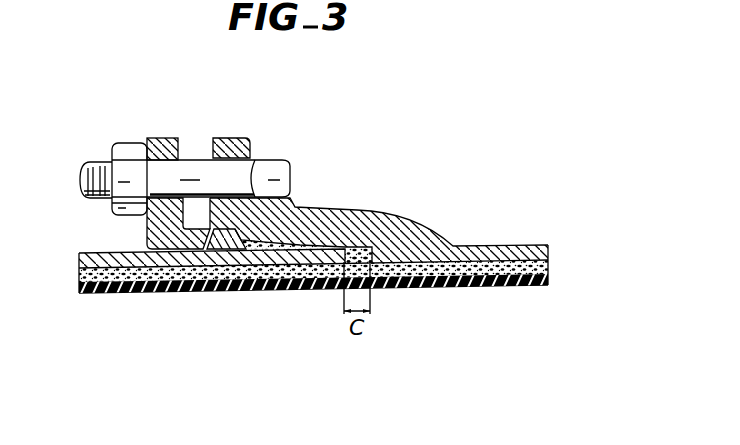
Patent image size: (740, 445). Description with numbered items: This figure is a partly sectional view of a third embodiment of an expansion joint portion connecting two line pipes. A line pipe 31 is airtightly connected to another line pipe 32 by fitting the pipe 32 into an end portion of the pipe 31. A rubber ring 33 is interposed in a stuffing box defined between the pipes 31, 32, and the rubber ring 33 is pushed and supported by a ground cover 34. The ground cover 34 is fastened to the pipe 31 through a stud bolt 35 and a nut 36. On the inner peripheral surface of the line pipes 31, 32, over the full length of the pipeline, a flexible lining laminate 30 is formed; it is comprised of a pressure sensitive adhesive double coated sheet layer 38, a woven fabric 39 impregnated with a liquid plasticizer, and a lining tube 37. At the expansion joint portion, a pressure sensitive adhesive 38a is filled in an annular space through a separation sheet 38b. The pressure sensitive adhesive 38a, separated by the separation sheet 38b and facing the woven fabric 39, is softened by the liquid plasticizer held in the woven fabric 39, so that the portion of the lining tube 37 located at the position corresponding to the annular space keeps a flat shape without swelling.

The flexible lining laminate 30 is at (562, 268).
The line pipe 31 is at (305, 210).
The line pipe 32 is at (92, 253).
The rubber ring 33 is at (235, 250).
The ground cover 34 is at (147, 220).
The stud bolt 35 is at (125, 146).
The nut 36 is at (192, 161).
The lining tube 37 is at (200, 284).
The pressure sensitive adhesive double coated sheet layer 38 is at (170, 285).
The pressure sensitive adhesive 38a is at (358, 250).
The separation sheet 38b is at (371, 258).
The woven fabric 39 is at (483, 258).